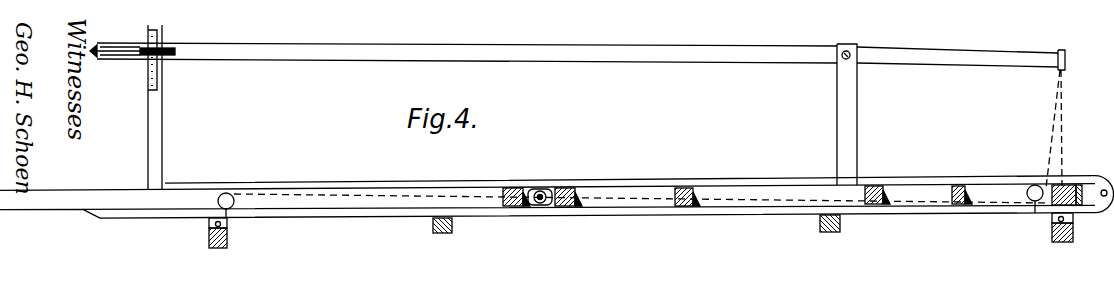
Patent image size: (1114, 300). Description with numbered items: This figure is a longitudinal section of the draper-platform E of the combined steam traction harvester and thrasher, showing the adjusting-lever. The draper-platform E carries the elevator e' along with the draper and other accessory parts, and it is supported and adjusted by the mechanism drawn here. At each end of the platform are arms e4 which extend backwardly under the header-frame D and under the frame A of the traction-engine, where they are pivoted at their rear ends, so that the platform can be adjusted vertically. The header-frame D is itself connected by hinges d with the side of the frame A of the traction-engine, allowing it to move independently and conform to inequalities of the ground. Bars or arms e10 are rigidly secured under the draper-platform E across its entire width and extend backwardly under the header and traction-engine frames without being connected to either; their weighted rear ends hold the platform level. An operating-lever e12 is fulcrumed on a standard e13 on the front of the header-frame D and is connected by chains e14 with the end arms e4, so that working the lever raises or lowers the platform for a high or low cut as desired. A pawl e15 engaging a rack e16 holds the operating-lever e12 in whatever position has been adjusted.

The elevator e' is at (82, 186).
The arms e4 is at (227, 238).
The bars or arms e10 is at (452, 226).
The operating-lever e12 is at (558, 52).
The standard e13 is at (842, 90).
The chains e14 is at (1060, 147).
The pawl e15 is at (111, 57).
The rack e16 is at (148, 70).
The frame of the traction-engine A is at (383, 187).
The header-frame D is at (803, 197).
The hinges d is at (541, 190).
The draper-platform E is at (692, 183).